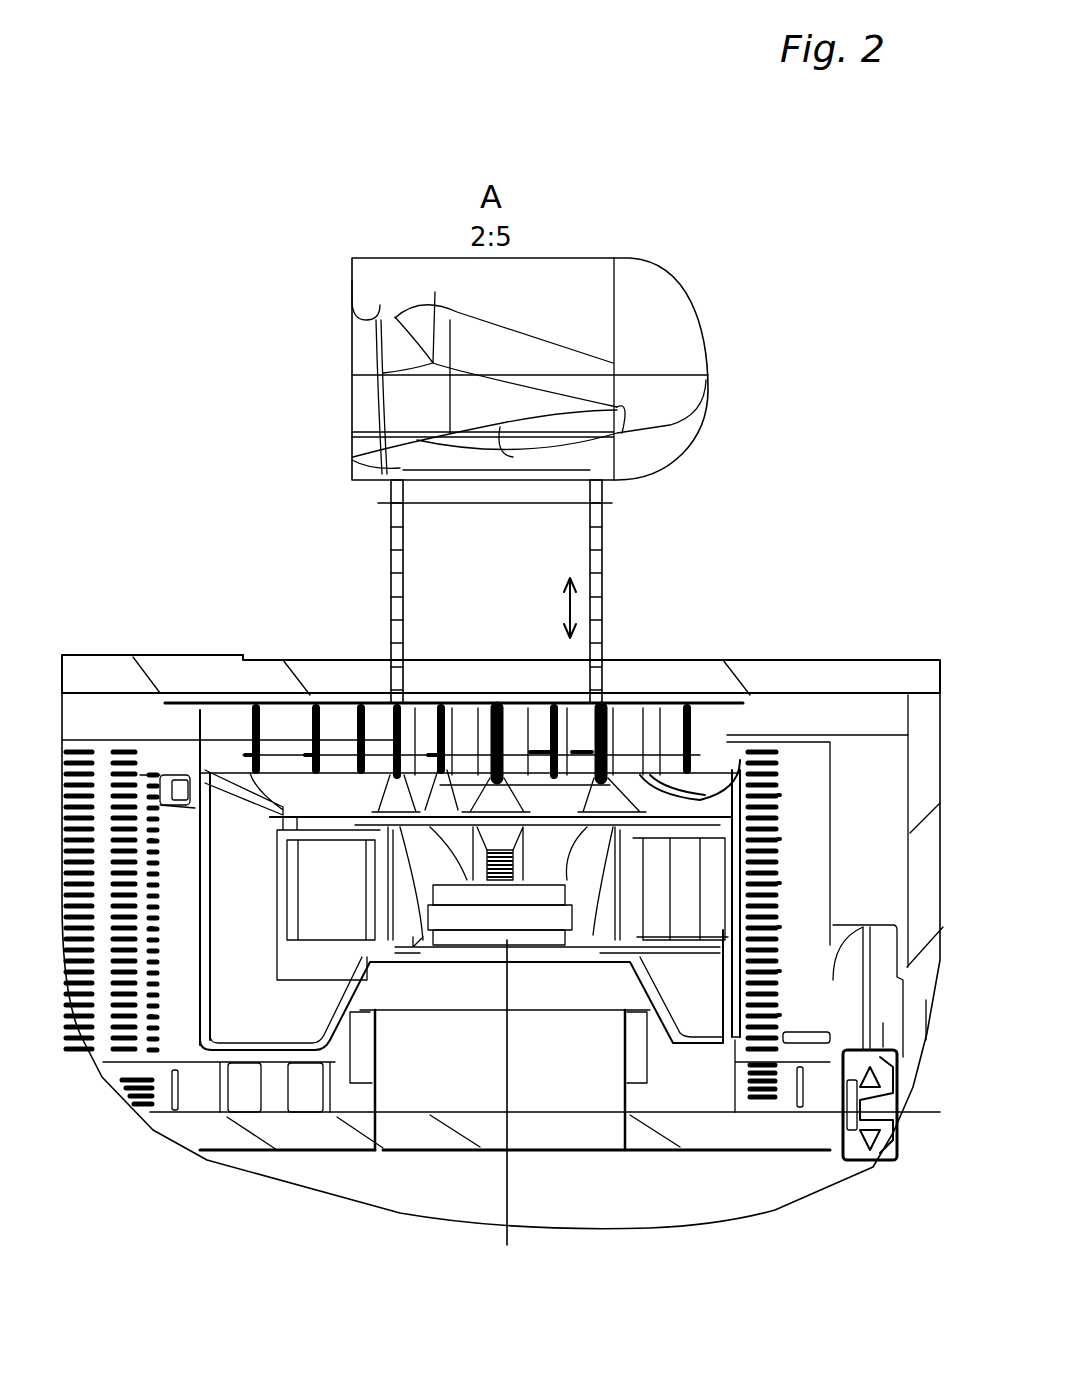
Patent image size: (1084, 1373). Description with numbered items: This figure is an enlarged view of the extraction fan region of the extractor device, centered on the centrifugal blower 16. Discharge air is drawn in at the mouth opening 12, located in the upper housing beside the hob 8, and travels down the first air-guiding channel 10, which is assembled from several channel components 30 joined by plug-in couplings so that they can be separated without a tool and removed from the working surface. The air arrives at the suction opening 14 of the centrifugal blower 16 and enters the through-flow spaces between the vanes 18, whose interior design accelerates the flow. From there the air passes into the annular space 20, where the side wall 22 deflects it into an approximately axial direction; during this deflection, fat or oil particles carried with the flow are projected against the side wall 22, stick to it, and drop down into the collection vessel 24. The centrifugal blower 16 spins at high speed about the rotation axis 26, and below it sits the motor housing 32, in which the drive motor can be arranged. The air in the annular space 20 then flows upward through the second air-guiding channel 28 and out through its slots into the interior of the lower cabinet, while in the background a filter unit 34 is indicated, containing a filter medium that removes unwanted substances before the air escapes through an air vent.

The hob 8 is at (172, 660).
The first air-guiding channel 10 is at (505, 628).
The mouth opening 12 is at (354, 369).
The suction opening 14 is at (495, 805).
The centrifugal blower 16 is at (630, 937).
The vanes 18 is at (675, 907).
The annular space 20 is at (345, 905).
The side wall 22 is at (198, 875).
The collection vessel 24 is at (290, 1030).
The rotation axis 26 is at (510, 1192).
The second air-guiding channel 28 is at (245, 830).
The channel components 30 is at (710, 356).
The motor housing 32 is at (555, 1082).
The filter unit 34 is at (137, 1028).